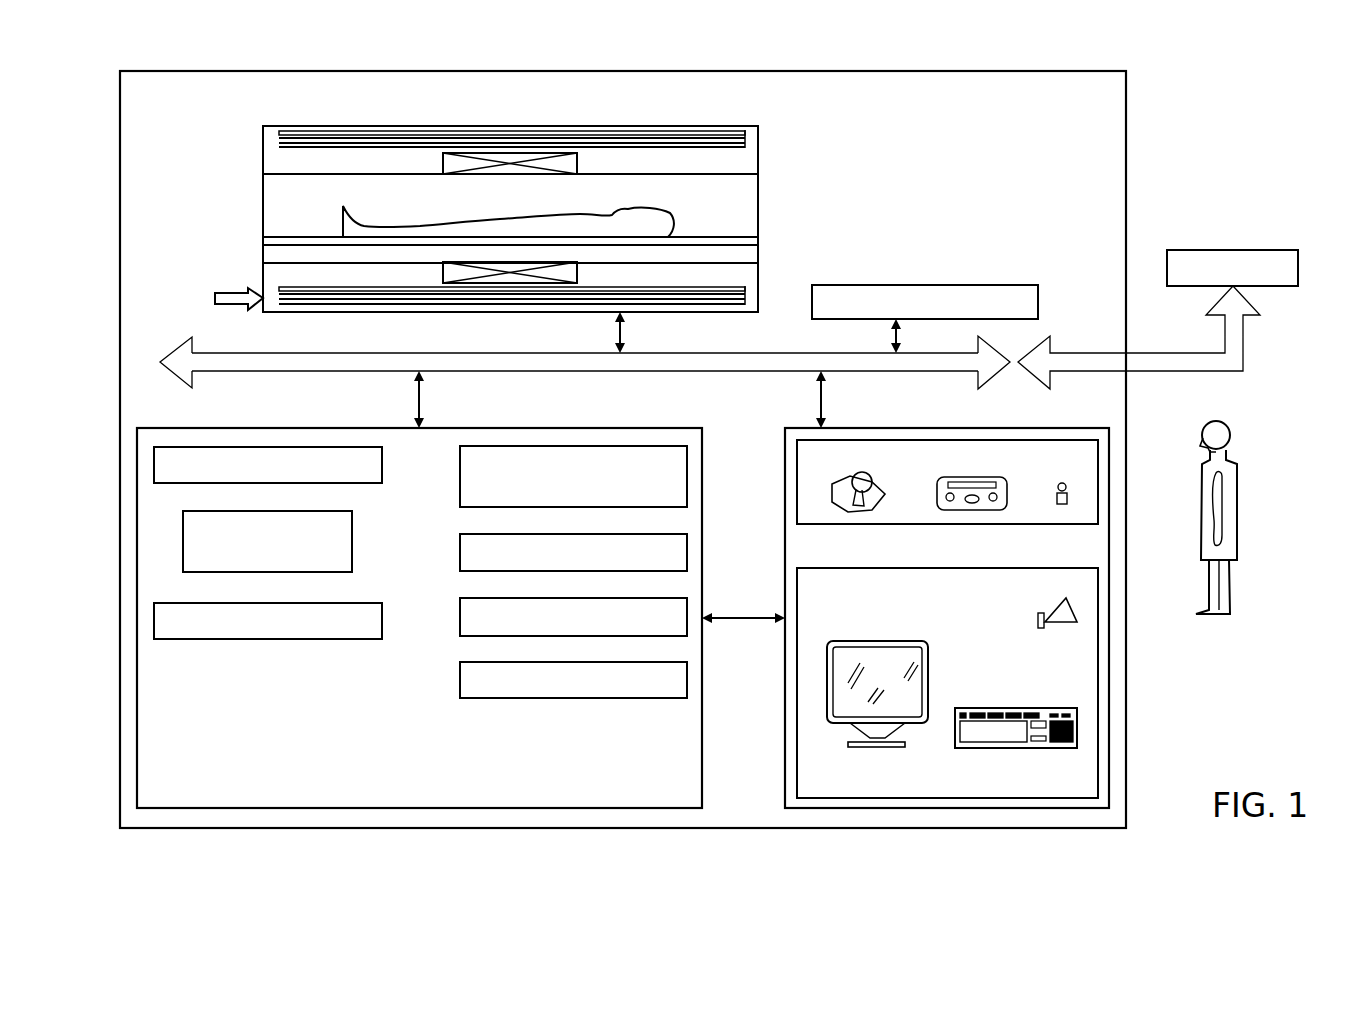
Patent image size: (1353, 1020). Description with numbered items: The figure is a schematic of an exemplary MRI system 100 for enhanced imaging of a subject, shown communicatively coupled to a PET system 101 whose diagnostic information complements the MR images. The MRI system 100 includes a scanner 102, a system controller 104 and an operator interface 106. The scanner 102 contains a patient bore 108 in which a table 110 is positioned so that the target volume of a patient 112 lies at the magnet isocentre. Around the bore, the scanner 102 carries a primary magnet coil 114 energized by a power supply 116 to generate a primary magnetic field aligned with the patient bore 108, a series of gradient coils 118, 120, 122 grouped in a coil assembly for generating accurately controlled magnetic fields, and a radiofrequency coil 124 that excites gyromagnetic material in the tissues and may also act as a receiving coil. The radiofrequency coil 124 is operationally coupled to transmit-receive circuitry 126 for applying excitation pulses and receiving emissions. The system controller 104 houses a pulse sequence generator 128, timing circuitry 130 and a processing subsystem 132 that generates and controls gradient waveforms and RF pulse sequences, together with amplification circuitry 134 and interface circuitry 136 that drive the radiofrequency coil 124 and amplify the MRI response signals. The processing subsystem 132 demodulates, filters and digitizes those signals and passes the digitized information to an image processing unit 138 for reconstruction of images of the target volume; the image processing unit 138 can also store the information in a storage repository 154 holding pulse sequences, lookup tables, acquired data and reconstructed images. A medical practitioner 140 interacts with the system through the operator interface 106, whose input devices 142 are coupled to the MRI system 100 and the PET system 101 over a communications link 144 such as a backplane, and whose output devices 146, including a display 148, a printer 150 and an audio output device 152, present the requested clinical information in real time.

The MRI system 100 is at (1128, 62).
The PET system 101 is at (1232, 250).
The scanner 102 is at (260, 190).
The system controller 104 is at (190, 427).
The operator interface 106 is at (790, 427).
The patient bore 108 is at (758, 198).
The table 110 is at (757, 241).
The patient 112 is at (391, 228).
The primary magnet coil 114 is at (595, 126).
The power supply 116 is at (226, 290).
The gradient coil 118 is at (680, 136).
The gradient coil 120 is at (741, 132).
The gradient coil 122 is at (746, 144).
The radiofrequency coil 124 is at (443, 162).
The transmit-receive circuitry 126 is at (688, 475).
The pulse sequence generator 128 is at (353, 540).
The timing circuitry 130 is at (383, 621).
The processing subsystem 132 is at (383, 465).
The amplification circuitry 134 is at (688, 552).
The interface circuitry 136 is at (688, 603).
The image processing unit 138 is at (925, 285).
The medical practitioner 140 is at (1238, 469).
The input devices 142 is at (988, 441).
The communications link 144 is at (184, 348).
The output devices 146 is at (905, 551).
The display 148 is at (929, 647).
The printer 150 is at (1040, 708).
The audio output device 152 is at (1052, 606).
The storage repository 154 is at (688, 680).